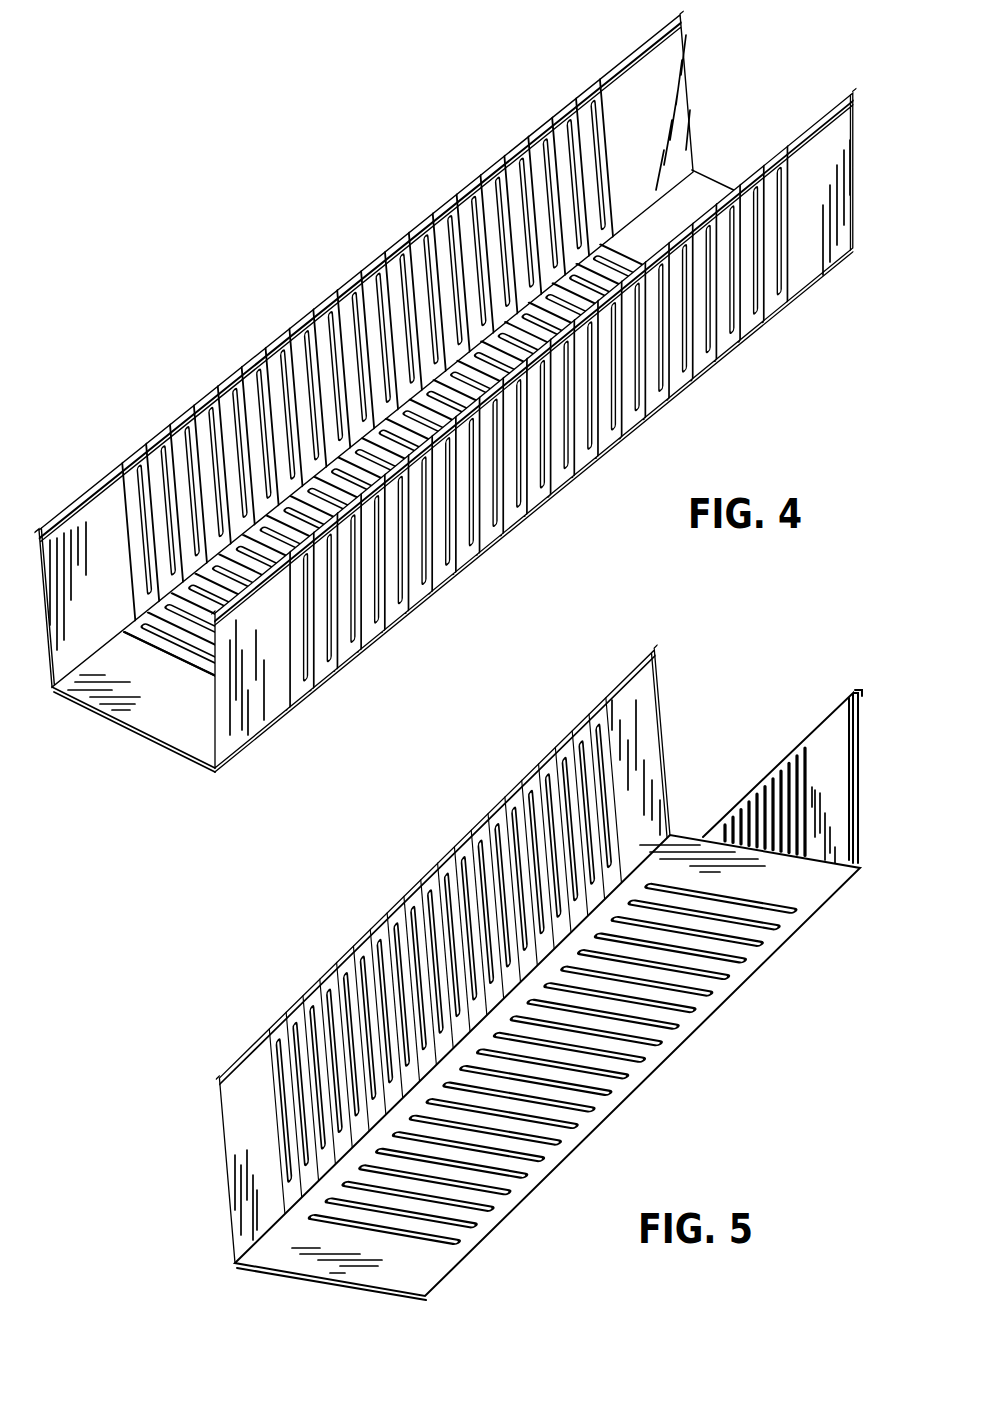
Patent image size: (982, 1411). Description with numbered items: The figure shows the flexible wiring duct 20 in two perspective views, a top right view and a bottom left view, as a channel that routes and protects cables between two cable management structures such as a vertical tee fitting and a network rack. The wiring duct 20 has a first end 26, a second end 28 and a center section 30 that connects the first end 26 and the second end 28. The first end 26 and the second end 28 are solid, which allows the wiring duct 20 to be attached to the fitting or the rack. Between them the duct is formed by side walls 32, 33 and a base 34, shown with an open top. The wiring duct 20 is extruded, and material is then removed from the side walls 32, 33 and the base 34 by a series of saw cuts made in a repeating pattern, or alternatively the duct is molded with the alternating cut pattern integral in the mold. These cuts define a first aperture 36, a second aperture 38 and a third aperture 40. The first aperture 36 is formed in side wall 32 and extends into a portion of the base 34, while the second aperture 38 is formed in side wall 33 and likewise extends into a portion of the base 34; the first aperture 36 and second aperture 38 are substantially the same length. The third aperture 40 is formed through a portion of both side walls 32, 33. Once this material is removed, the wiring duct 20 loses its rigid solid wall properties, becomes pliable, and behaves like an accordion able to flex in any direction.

In FIG. 4, the wiring duct 20 is at (330, 277).
In FIG. 5, the wiring duct 20 is at (367, 903).
In FIG. 4, the first end 26 is at (705, 187).
In FIG. 5, the first end 26 is at (820, 777).
In FIG. 4, the second end 28 is at (137, 683).
In FIG. 5, the second end 28 is at (248, 1120).
In FIG. 4, the center section 30 is at (552, 498).
In FIG. 5, the center section 30 is at (632, 1095).
In FIG. 4, the side wall 32 is at (253, 353).
In FIG. 5, the side wall 32 is at (780, 780).
In FIG. 4, the side wall 33 is at (663, 385).
In FIG. 5, the side wall 33 is at (457, 847).
In FIG. 4, the base 34 is at (192, 655).
In FIG. 5, the base 34 is at (757, 880).
In FIG. 4, the first aperture 36 is at (227, 377).
In FIG. 5, the first aperture 36 is at (783, 778).
In FIG. 4, the second aperture 38 is at (683, 297).
In FIG. 5, the second aperture 38 is at (562, 782).
In FIG. 4, the third aperture 40 is at (200, 417).
In FIG. 5, the third aperture 40 is at (795, 775).